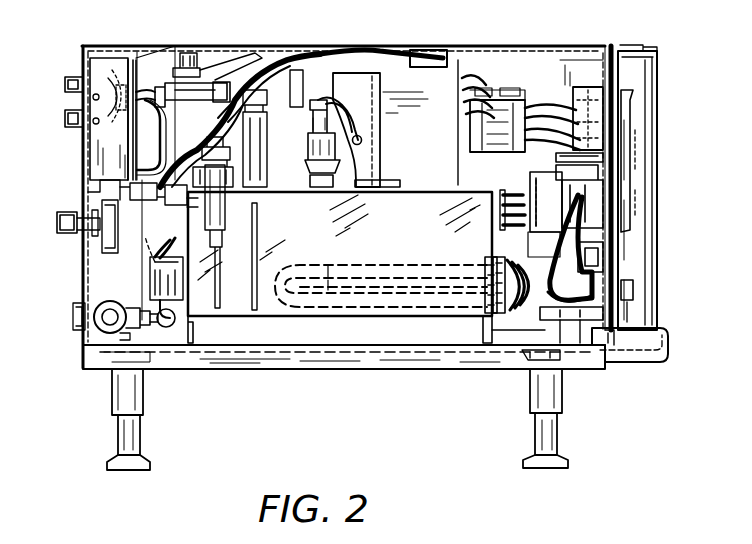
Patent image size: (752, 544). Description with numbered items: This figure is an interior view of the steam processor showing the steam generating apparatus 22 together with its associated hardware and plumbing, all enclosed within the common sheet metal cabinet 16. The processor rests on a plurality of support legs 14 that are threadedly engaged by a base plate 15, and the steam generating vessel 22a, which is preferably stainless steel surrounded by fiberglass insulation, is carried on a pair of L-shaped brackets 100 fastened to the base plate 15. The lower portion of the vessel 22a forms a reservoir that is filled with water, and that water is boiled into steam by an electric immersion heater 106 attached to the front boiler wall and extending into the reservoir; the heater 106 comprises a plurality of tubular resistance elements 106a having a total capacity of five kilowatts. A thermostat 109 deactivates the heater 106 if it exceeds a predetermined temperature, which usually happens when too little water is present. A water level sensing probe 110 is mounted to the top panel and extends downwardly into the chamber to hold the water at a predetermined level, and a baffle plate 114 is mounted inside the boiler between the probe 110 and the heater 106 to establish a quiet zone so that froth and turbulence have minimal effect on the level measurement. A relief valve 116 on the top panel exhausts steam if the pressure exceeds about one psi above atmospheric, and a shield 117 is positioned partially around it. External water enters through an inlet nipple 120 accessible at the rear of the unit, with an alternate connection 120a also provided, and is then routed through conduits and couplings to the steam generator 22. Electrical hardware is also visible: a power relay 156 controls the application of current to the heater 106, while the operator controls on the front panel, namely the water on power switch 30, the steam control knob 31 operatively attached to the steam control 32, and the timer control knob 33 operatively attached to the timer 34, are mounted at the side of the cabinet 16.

The support legs 14 is at (133, 431).
The base plate 15 is at (332, 350).
The sheet metal cabinet 16 is at (343, 46).
The steam generating apparatus 22 is at (409, 241).
The steam generating vessel 22a is at (447, 192).
The water on power switch 30 is at (636, 286).
The steam control knob 31 is at (636, 233).
The steam control 32 is at (511, 251).
The timer control knob 33 is at (636, 105).
The timer 34 is at (583, 100).
The L-shaped brackets 100 is at (193, 331).
The electric immersion heater 106 is at (318, 266).
The tubular resistance elements 106a is at (305, 308).
The thermostat 109 is at (567, 311).
The water level sensing probe 110 is at (253, 168).
The baffle plate 114 is at (262, 213).
The relief valve 116 is at (318, 135).
The shield 117 is at (380, 96).
The inlet nipple 120 is at (62, 235).
The alternate connection 120a is at (124, 308).
The power relay 156 is at (492, 148).